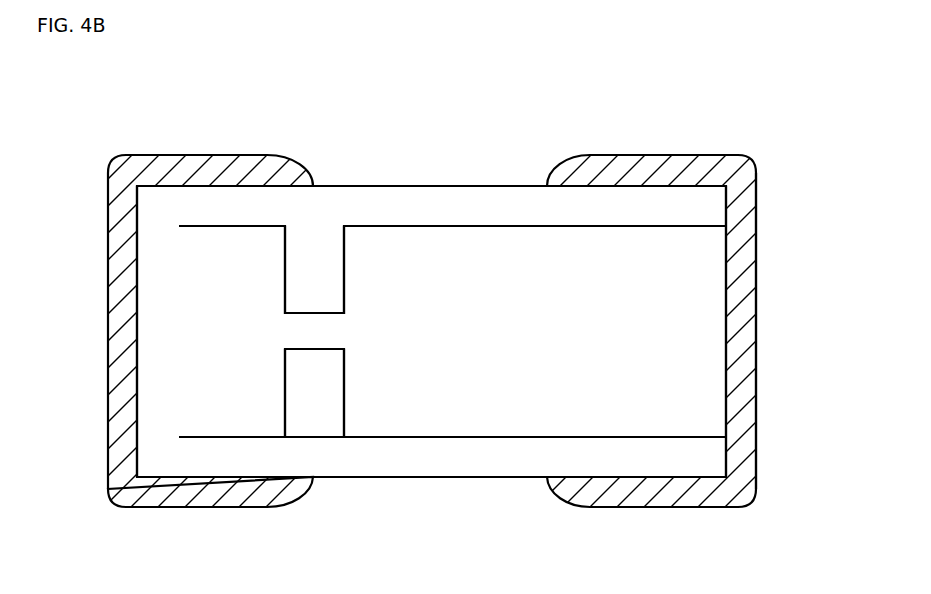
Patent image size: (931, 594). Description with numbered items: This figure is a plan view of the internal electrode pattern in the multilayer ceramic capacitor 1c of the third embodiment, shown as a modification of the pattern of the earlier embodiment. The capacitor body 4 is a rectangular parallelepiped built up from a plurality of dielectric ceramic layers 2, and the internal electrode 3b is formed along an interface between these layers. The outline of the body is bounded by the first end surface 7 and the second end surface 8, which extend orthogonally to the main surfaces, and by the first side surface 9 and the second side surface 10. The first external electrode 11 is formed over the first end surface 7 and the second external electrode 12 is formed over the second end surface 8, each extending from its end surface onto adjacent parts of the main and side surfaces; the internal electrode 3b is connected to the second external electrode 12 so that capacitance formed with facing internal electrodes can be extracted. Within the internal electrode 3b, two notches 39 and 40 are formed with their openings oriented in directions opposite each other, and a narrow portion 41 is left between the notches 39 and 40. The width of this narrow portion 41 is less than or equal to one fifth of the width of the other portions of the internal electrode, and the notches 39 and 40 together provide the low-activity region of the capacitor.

The multilayer ceramic capacitor 1c is at (149, 88).
The dielectric ceramic layer 2 is at (148, 198).
The internal electrode 3b is at (178, 332).
The capacitor body 4 is at (493, 186).
The first end surface 7 is at (137, 375).
The second end surface 8 is at (727, 347).
The first side surface 9 is at (392, 186).
The second side surface 10 is at (428, 477).
The first external electrode 11 is at (115, 280).
The second external electrode 12 is at (747, 230).
The notch 39 is at (313, 247).
The notch 40 is at (315, 420).
The narrow portion 41 is at (315, 337).